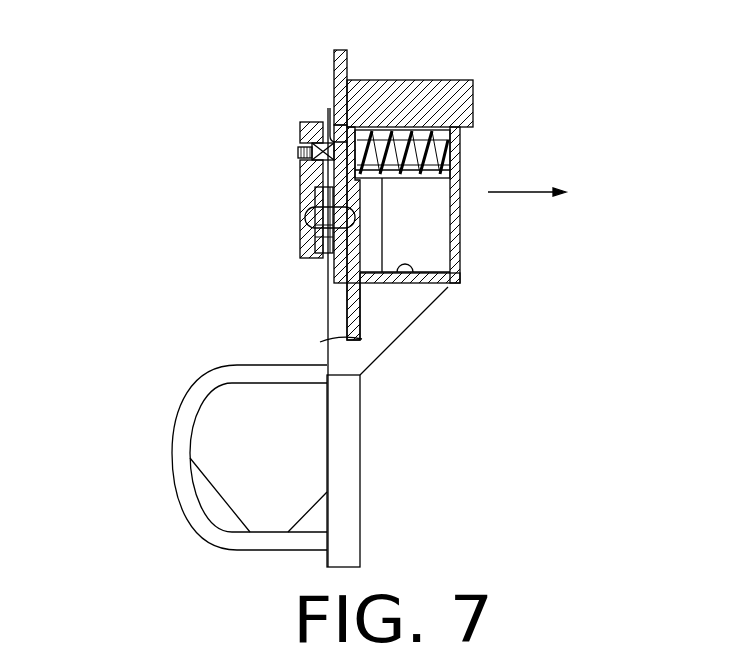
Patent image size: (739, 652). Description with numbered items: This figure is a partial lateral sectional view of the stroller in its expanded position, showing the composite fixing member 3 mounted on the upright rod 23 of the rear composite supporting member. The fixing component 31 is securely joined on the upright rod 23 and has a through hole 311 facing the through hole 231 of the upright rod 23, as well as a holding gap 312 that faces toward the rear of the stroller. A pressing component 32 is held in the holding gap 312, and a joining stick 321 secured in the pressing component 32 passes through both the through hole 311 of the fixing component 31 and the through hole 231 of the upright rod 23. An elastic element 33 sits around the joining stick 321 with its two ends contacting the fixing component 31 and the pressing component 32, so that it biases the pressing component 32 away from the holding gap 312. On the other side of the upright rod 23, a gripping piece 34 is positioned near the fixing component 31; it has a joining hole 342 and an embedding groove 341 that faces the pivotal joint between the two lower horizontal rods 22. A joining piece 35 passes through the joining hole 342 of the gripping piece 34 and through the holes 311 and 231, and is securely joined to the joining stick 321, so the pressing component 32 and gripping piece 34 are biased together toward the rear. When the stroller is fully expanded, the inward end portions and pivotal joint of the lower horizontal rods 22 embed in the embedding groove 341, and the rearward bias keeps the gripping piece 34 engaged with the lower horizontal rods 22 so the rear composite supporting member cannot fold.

The composite fixing member 3 is at (127, 273).
The lower horizontal rods 22 is at (327, 257).
The upright rod 23 is at (334, 62).
The through hole 231 is at (329, 118).
The fixing component 31 is at (475, 82).
The through hole 311 is at (363, 80).
The holding gap 312 is at (413, 283).
The pressing component 32 is at (460, 228).
The joining stick 321 is at (450, 158).
The elastic element 33 is at (427, 107).
The gripping piece 34 is at (300, 181).
The embedding groove 341 is at (300, 203).
The joining hole 342 is at (300, 145).
The joining piece 35 is at (300, 158).